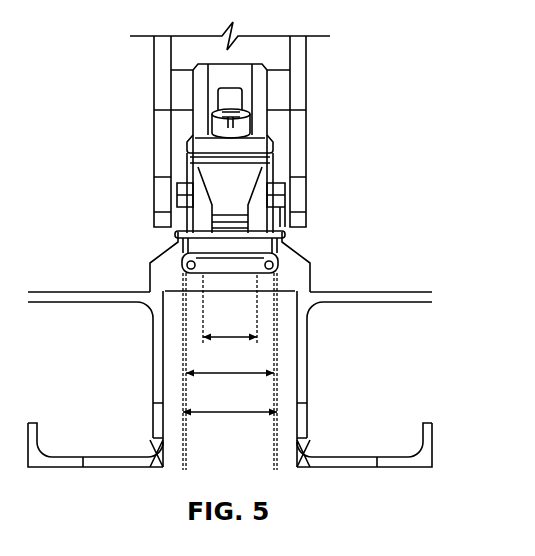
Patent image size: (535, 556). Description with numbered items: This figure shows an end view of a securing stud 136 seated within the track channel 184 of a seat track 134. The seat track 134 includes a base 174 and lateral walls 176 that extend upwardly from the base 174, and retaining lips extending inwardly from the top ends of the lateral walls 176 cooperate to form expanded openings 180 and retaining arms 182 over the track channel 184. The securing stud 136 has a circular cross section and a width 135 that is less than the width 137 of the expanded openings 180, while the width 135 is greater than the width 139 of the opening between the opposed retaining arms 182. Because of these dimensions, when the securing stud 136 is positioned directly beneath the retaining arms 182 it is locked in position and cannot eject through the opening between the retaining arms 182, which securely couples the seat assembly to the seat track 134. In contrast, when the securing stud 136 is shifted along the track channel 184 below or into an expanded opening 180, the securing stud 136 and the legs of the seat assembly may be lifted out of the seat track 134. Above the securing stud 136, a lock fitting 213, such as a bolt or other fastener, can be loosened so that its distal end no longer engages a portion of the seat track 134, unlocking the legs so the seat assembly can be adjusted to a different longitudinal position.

The seat track 134 is at (140, 309).
The width of the securing stud 135 is at (230, 375).
The securing stud 136 is at (188, 272).
The width of the expanded openings 137 is at (232, 413).
The width of the opening between opposed retaining arms 139 is at (230, 338).
The base 174 is at (397, 303).
The lateral wall 176 is at (158, 258).
The expanded opening 180 is at (213, 253).
The retaining arm 182 is at (205, 252).
The track channel 184 is at (270, 250).
The lock fitting 213 is at (241, 109).